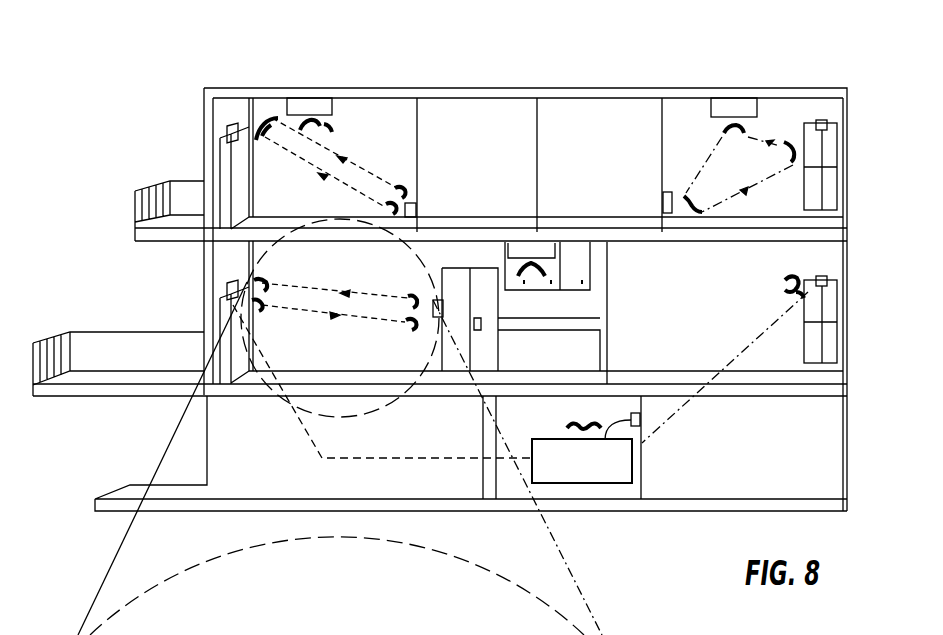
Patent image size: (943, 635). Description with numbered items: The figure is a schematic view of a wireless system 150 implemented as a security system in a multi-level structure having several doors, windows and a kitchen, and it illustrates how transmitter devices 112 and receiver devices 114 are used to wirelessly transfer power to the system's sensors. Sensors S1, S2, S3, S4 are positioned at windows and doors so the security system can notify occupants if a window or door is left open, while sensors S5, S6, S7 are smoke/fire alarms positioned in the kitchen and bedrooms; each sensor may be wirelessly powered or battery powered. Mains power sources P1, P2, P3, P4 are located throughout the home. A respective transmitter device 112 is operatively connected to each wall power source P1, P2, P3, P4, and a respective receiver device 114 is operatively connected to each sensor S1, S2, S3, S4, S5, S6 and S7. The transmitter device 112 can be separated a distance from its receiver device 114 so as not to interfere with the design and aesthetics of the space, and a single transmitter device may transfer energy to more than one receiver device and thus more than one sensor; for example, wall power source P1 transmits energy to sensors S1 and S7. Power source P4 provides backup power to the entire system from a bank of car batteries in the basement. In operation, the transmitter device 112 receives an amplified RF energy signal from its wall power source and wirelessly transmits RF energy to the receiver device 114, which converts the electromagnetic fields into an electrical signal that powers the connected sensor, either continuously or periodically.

The wireless system 150 is at (521, 60).
The transmitter device 112 is at (684, 193).
The receiver device 114 is at (258, 118).
The sensor S1 is at (822, 120).
The sensor S2 is at (825, 280).
The sensor S3 is at (227, 134).
The sensor S4 is at (227, 290).
The sensor S5 is at (535, 262).
The sensor S6 is at (318, 108).
The sensor S7 is at (731, 105).
The mains power source P1 is at (663, 200).
The mains power source P2 is at (412, 205).
The mains power source P3 is at (437, 320).
The mains power source P4 is at (632, 466).